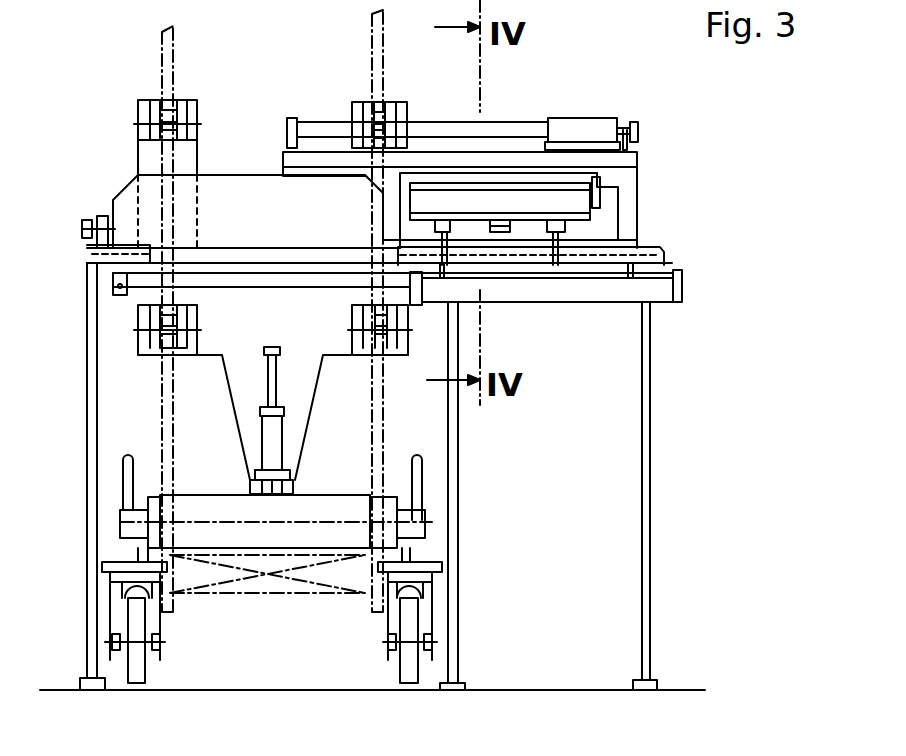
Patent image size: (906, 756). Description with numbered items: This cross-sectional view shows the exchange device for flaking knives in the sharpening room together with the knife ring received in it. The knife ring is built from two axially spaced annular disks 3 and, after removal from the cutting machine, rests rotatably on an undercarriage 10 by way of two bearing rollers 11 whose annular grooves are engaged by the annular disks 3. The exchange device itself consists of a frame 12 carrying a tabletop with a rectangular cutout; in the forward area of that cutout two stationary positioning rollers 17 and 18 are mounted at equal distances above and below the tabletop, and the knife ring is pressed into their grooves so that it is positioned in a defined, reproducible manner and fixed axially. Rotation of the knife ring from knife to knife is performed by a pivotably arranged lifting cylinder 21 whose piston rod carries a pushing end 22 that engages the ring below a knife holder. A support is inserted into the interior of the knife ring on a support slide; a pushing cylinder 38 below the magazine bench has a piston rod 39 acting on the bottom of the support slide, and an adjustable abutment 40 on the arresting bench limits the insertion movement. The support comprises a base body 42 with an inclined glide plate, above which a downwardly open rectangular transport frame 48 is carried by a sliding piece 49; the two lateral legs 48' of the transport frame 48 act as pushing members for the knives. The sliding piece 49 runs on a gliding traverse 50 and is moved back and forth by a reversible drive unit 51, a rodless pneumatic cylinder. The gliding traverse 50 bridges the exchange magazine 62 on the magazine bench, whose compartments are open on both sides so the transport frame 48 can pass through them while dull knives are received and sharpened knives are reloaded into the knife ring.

The annular disks 3 is at (168, 406).
The undercarriage 10 is at (435, 588).
The bearing rollers 11 is at (333, 520).
The frame 12 is at (653, 434).
The positioning roller 17 is at (138, 112).
The positioning roller 18 is at (140, 338).
The lifting cylinder 21 is at (273, 432).
The pushing end 22 is at (272, 347).
The pushing cylinder 38 is at (560, 288).
The piston rod 39 is at (232, 288).
The adjustable abutment 40 is at (110, 230).
The base body 42 is at (280, 236).
The transport frame 48 is at (511, 170).
The lateral legs 48' is at (650, 192).
The sliding piece 49 is at (585, 143).
The gliding traverse 50 is at (500, 160).
The reversible drive unit 51 is at (637, 136).
The exchange magazine 62 is at (593, 222).